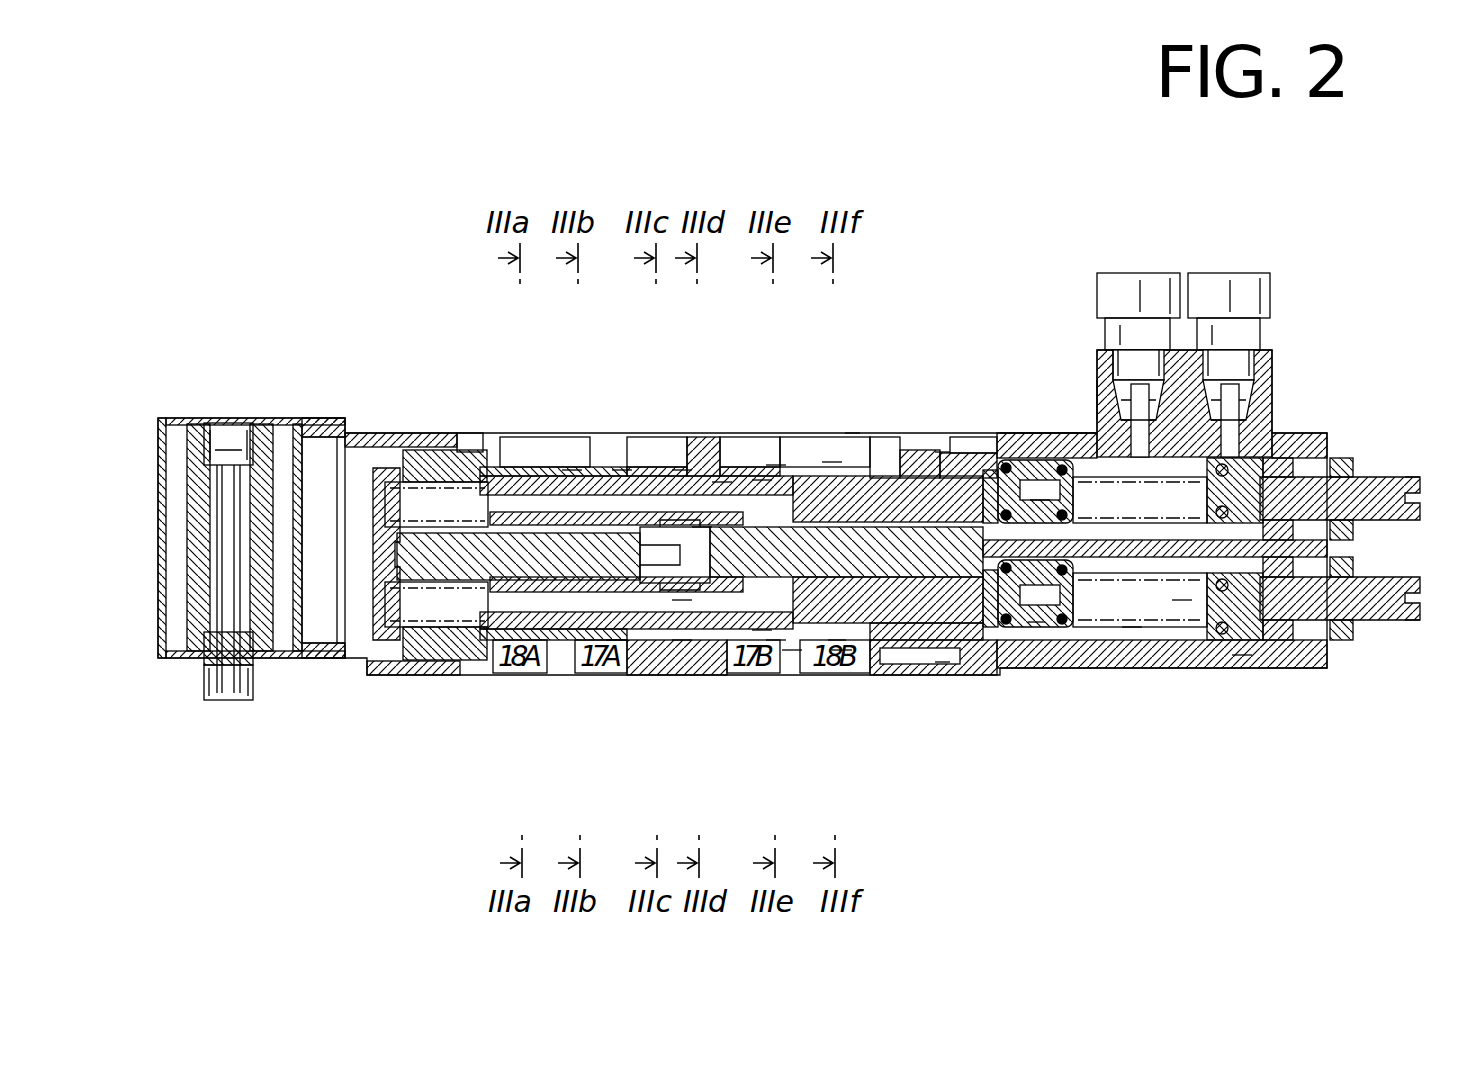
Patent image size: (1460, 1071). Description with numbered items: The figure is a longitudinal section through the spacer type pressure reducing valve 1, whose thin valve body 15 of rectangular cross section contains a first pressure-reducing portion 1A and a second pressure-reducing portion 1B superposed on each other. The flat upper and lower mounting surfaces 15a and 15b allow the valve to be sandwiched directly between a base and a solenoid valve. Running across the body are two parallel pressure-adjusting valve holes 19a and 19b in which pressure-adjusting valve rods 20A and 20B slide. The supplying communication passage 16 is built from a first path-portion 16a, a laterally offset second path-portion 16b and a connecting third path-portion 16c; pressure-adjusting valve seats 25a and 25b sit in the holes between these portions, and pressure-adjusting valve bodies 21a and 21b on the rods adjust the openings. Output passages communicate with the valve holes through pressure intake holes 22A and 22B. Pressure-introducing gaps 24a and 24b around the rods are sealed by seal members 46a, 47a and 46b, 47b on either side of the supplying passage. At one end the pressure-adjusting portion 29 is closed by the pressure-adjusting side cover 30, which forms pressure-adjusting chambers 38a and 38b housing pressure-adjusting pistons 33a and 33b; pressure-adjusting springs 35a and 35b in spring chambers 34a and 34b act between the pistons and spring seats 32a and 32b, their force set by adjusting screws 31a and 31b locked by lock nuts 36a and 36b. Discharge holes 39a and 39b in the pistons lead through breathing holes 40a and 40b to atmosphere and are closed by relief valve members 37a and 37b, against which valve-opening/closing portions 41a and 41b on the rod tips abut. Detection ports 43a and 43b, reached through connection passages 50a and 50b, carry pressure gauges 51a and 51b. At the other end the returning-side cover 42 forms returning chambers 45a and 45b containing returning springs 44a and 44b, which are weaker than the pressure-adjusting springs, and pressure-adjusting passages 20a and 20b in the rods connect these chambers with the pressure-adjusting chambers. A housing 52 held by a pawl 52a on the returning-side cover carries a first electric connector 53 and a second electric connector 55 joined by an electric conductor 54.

The pressure reducing valve 1 is at (973, 199).
The first pressure-reducing portion 1A is at (1437, 654).
The second pressure-reducing portion 1B is at (1426, 456).
The valve body 15 is at (688, 522).
The mounting surface 15a is at (842, 650).
The mounting surface 15b is at (832, 462).
The supplying communication passage 16 is at (669, 778).
The first path-portion 16a is at (682, 600).
The second path-portion 16b is at (702, 527).
The third path-portion 16c is at (722, 482).
The pressure-adjusting valve hole 19a is at (762, 630).
The pressure-adjusting valve hole 19b is at (762, 480).
The pressure-adjusting passage 20a is at (522, 630).
The pressure-adjusting passage 20b is at (522, 487).
The pressure-adjusting valve rod 20A is at (776, 640).
The pressure-adjusting valve rod 20B is at (776, 465).
The pressure-adjusting valve body 21a is at (632, 630).
The pressure-adjusting valve body 21b is at (632, 482).
The pressure intake hole 22A is at (572, 470).
The pressure intake hole 22B is at (792, 650).
The pressure-introducing gap 24a is at (912, 640).
The pressure-introducing gap 24b is at (905, 470).
The pressure-adjusting valve seat 25a is at (682, 640).
The pressure-adjusting valve seat 25b is at (682, 470).
The pressure-adjusting portion 29 is at (1373, 245).
The pressure-adjusting side cover 30 is at (1242, 656).
The adjusting screw 31a is at (1392, 626).
The adjusting screw 31b is at (1386, 522).
The spring seat 32a is at (1322, 646).
The spring seat 32b is at (1292, 462).
The pressure-adjusting piston 33a is at (1036, 622).
The pressure-adjusting piston 33b is at (1040, 500).
The spring chamber 34a is at (1242, 640).
The spring chamber 34b is at (1262, 400).
The pressure-adjusting spring 35a is at (1292, 650).
The pressure-adjusting spring 35b is at (1270, 432).
The lock nut 36a is at (1346, 650).
The lock nut 36b is at (1332, 460).
The relief valve member 37a is at (1006, 622).
The relief valve member 37b is at (1002, 470).
The pressure-adjusting chamber 38a is at (992, 640).
The pressure-adjusting chamber 38b is at (988, 478).
The discharge hole 39a is at (1062, 622).
The discharge hole 39b is at (1045, 490).
The breathing hole 40a is at (1132, 626).
The breathing hole 40b is at (1182, 600).
The valve-opening/closing portion 41a is at (942, 662).
The valve-opening/closing portion 41b is at (942, 452).
The returning-side cover 42 is at (360, 440).
The detection port 43a is at (1238, 332).
The detection port 43b is at (1160, 322).
The returning spring 44a is at (470, 660).
The returning spring 44b is at (466, 456).
The returning chamber 45a is at (416, 626).
The returning chamber 45b is at (425, 482).
The seal member 46a is at (616, 640).
The seal member 46b is at (622, 470).
The seal member 47a is at (836, 640).
The seal member 47b is at (850, 432).
The connection passage 50a is at (1118, 360).
The connection passage 50b is at (1100, 398).
The pressure gauge 51a is at (1212, 295).
The pressure gauge 51b is at (1120, 295).
The housing 52 is at (256, 660).
The pawl 52a is at (320, 660).
The first electric connector 53 is at (226, 440).
The electric conductor 54 is at (215, 505).
The second electric connector 55 is at (212, 702).